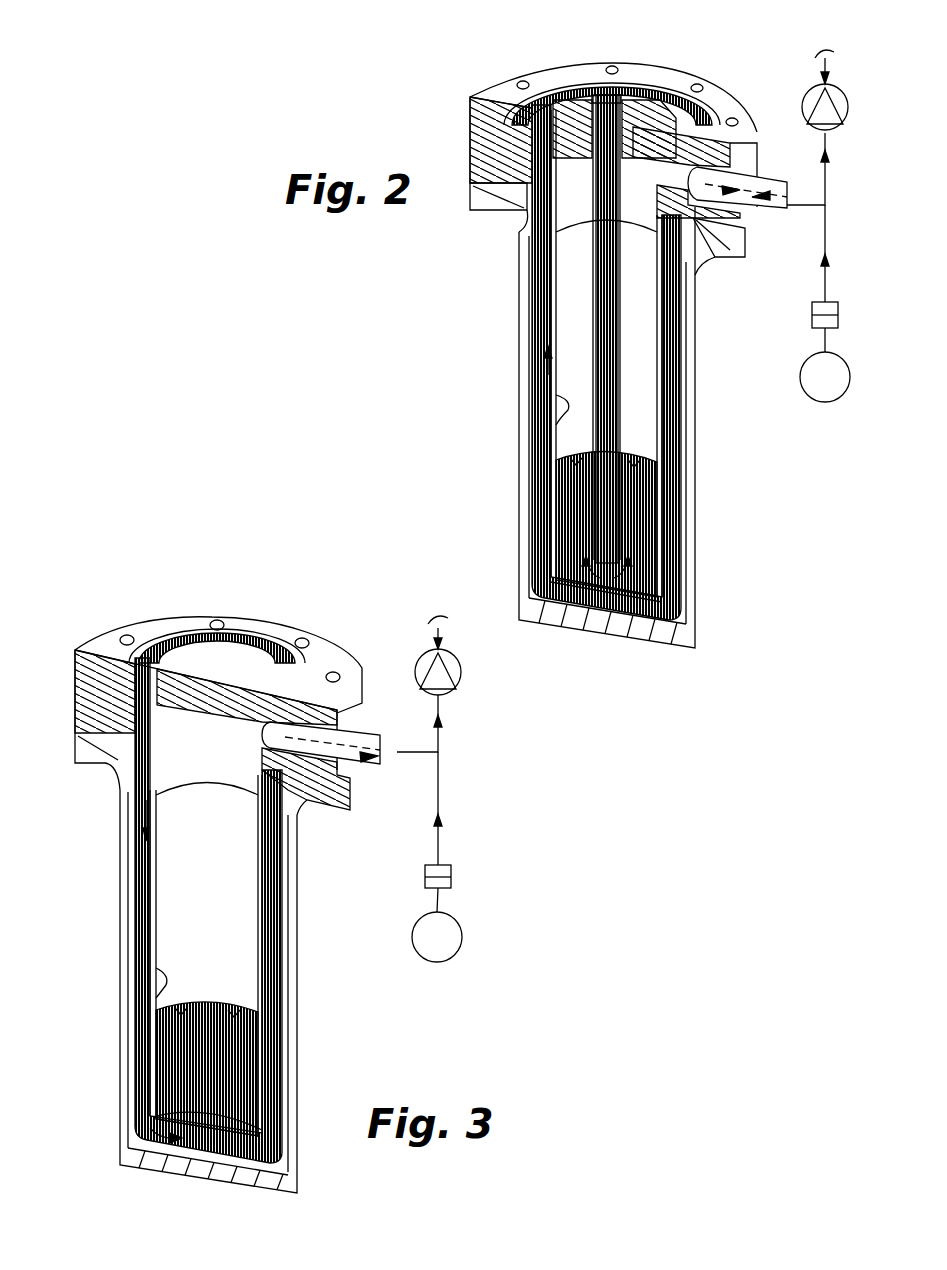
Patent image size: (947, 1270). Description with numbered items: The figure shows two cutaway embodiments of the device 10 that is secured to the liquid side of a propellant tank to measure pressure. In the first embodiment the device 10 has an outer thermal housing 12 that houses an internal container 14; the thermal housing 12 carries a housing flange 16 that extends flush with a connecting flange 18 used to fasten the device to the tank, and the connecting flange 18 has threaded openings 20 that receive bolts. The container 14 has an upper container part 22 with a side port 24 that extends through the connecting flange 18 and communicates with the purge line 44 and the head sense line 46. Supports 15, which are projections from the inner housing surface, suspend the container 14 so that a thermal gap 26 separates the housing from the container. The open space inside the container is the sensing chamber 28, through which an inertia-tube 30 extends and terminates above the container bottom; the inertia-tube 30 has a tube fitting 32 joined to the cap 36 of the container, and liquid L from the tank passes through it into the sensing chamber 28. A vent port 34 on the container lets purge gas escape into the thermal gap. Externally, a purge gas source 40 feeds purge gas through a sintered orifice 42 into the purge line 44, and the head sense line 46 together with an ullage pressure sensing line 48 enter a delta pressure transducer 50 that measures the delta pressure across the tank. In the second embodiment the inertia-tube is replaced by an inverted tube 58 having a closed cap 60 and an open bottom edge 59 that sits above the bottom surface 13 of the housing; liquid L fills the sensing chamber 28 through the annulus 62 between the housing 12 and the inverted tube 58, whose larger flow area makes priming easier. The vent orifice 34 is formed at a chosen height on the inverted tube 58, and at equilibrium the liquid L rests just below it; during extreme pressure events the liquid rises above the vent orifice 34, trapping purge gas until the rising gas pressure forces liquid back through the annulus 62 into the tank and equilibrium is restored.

In FIG. 2, the device 10 is at (424, 86).
In FIG. 3, the device 10 is at (124, 602).
In FIG. 2, the outer thermal housing 12 is at (522, 428).
In FIG. 3, the outer thermal housing 12 is at (293, 1053).
In FIG. 2, the bottom surface 13 is at (663, 617).
In FIG. 3, the bottom surface 13 is at (233, 1153).
In FIG. 2, the internal container 14 is at (667, 380).
In FIG. 2, the supports 15 is at (543, 268).
In FIG. 3, the supports 15 is at (150, 878).
In FIG. 2, the housing flange 16 is at (490, 212).
In FIG. 3, the housing flange 16 is at (95, 765).
In FIG. 2, the connecting flange 18 is at (468, 150).
In FIG. 3, the connecting flange 18 is at (73, 678).
In FIG. 2, the threaded openings 20 is at (521, 82).
In FIG. 3, the threaded openings 20 is at (217, 620).
In FIG. 2, the upper container part 22 is at (512, 150).
In FIG. 2, the side port 24 is at (745, 142).
In FIG. 3, the side port 24 is at (322, 742).
In FIG. 2, the thermal gap 26 is at (522, 105).
In FIG. 2, the sensing chamber 28 is at (589, 336).
In FIG. 3, the sensing chamber 28 is at (232, 886).
In FIG. 2, the inertia-tube 30 is at (597, 262).
In FIG. 2, the tube fitting 32 is at (622, 118).
In FIG. 2, the vent port 34 is at (572, 448).
In FIG. 3, the vent port 34 is at (170, 978).
In FIG. 2, the cap 36 is at (565, 105).
In FIG. 2, the purge gas source 40 is at (834, 400).
In FIG. 3, the purge gas source 40 is at (442, 958).
In FIG. 2, the sintered orifice 42 is at (812, 322).
In FIG. 3, the sintered orifice 42 is at (451, 880).
In FIG. 2, the purge line 44 is at (829, 272).
In FIG. 3, the purge line 44 is at (442, 835).
In FIG. 2, the head sense line 46 is at (828, 172).
In FIG. 3, the head sense line 46 is at (441, 730).
In FIG. 2, the ullage pressure sensing line 48 is at (818, 56).
In FIG. 3, the ullage pressure sensing line 48 is at (447, 633).
In FIG. 2, the delta pressure transducer 50 is at (848, 102).
In FIG. 3, the delta pressure transducer 50 is at (462, 672).
In FIG. 3, the inverted tube 58 is at (143, 925).
In FIG. 3, the edge 59 is at (203, 1118).
In FIG. 3, the cap 60 is at (248, 672).
In FIG. 3, the annulus 62 is at (270, 997).
In FIG. 2, the liquid L is at (597, 110).
In FIG. 3, the liquid L is at (238, 650).